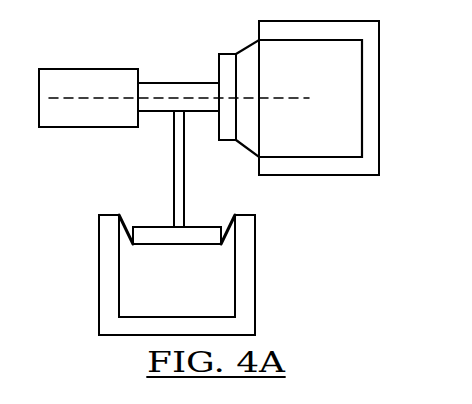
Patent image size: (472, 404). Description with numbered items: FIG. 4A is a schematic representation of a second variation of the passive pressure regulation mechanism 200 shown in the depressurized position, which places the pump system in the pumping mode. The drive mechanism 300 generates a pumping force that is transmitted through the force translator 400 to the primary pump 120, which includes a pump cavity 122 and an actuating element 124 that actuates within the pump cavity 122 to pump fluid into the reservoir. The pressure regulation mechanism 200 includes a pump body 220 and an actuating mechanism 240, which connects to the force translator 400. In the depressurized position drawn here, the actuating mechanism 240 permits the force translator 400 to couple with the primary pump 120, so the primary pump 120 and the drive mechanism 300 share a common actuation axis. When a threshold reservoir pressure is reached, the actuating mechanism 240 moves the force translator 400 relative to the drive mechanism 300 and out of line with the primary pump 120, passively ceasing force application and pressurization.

The primary pump 120 is at (393, 92).
The pump cavity 122 is at (311, 165).
The actuating element 124 is at (227, 69).
The passive pressure regulation mechanism 200 is at (68, 270).
The pump body 220 is at (250, 287).
The actuating mechanism 240 is at (150, 233).
The drive mechanism 300 is at (97, 73).
The force translator 400 is at (167, 88).